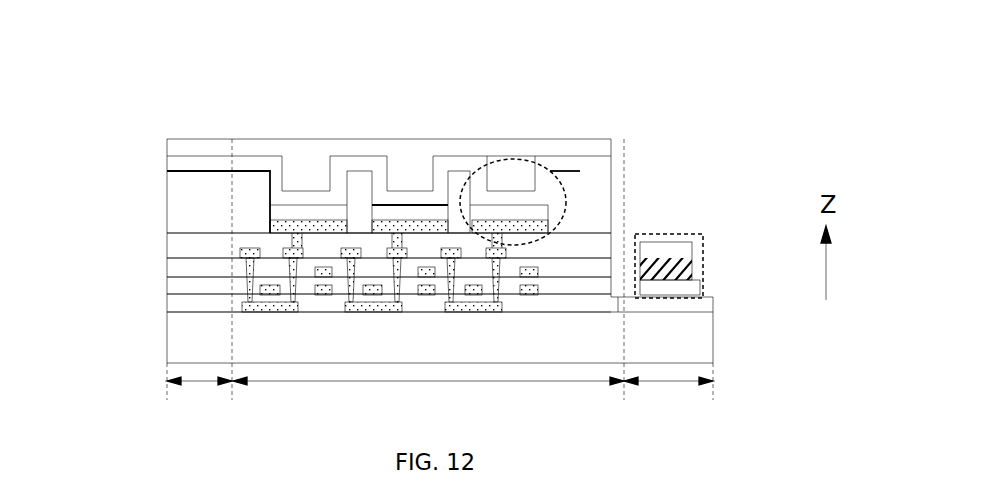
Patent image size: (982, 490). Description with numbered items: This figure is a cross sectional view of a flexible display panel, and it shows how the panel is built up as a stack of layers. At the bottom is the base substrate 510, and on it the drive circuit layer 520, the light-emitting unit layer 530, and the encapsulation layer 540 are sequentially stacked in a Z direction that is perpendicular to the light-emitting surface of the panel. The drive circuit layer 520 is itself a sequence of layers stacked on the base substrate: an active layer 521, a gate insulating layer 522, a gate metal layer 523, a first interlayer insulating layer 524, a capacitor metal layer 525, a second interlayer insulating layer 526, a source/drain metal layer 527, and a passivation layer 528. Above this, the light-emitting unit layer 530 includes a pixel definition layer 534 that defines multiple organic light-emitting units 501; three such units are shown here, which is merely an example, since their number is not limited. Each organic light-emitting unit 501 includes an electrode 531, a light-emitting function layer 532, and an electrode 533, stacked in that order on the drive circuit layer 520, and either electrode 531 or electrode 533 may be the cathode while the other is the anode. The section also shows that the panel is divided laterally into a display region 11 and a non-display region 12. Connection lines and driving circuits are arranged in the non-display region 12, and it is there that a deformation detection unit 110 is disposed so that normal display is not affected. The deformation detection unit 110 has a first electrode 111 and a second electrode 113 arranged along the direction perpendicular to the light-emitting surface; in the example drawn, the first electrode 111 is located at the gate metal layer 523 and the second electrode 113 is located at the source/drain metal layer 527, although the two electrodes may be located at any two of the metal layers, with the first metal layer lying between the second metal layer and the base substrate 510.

The base substrate 510 is at (183, 350).
The drive circuit layer 520 is at (100, 127).
The active layer 521 is at (257, 303).
The gate insulating layer 522 is at (200, 300).
The gate metal layer 523 is at (266, 288).
The first interlayer insulating layer 524 is at (197, 275).
The capacitor metal layer 525 is at (298, 257).
The second interlayer insulating layer 526 is at (313, 269).
The source/drain metal layer 527 is at (330, 260).
The passivation layer 528 is at (360, 238).
The light-emitting unit layer 530 is at (540, 100).
The electrode 531 is at (317, 220).
The light-emitting function layer 532 is at (340, 208).
The electrode 533 is at (397, 192).
The pixel definition layer 534 is at (455, 170).
The encapsulation layer 540 is at (583, 148).
The organic light-emitting unit 501 is at (567, 200).
The deformation detection unit 110 is at (705, 257).
The first electrode 111 is at (688, 288).
The second electrode 113 is at (676, 252).
The display region 11 is at (428, 396).
The non-display region 12 is at (440, 279).